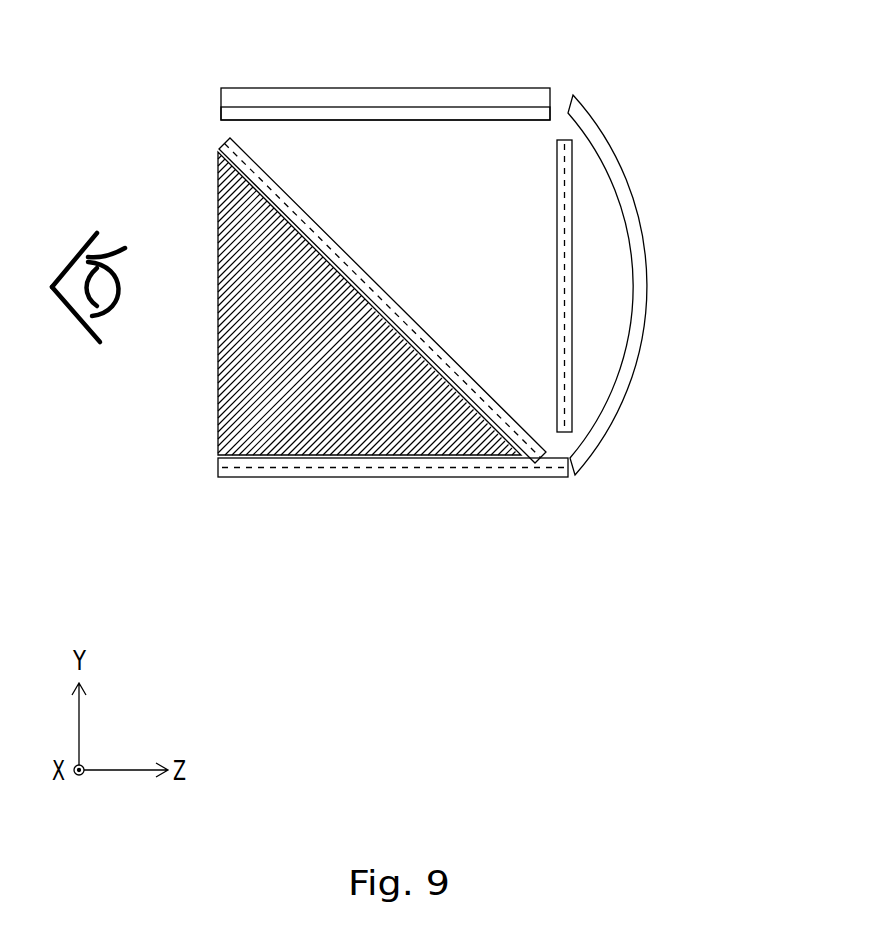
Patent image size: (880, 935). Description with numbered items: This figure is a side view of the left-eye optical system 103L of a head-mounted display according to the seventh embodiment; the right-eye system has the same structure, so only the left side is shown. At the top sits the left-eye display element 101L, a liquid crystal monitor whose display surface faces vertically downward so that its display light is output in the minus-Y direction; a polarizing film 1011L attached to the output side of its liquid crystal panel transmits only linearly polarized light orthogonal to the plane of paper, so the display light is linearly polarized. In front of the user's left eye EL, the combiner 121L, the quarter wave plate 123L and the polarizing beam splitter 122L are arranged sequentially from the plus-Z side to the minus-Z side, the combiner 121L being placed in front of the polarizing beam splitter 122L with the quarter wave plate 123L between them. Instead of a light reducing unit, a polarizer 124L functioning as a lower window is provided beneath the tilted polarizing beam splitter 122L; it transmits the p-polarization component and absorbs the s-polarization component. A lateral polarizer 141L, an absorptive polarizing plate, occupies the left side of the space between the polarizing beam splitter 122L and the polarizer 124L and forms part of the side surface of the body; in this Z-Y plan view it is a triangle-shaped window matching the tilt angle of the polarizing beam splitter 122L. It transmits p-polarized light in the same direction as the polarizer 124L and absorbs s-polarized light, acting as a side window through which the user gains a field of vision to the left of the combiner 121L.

The left-eye optical system 103L is at (362, 580).
The left-eye display element 101L is at (313, 88).
The polarizing film 1011L is at (505, 107).
The lateral polarizer 141L is at (232, 400).
The polarizing beam splitter 122L is at (217, 147).
The polarizer 124L is at (235, 480).
The 1/4 wave plate 123L is at (572, 177).
The combiner 121L is at (642, 213).
The left eye EL is at (80, 322).